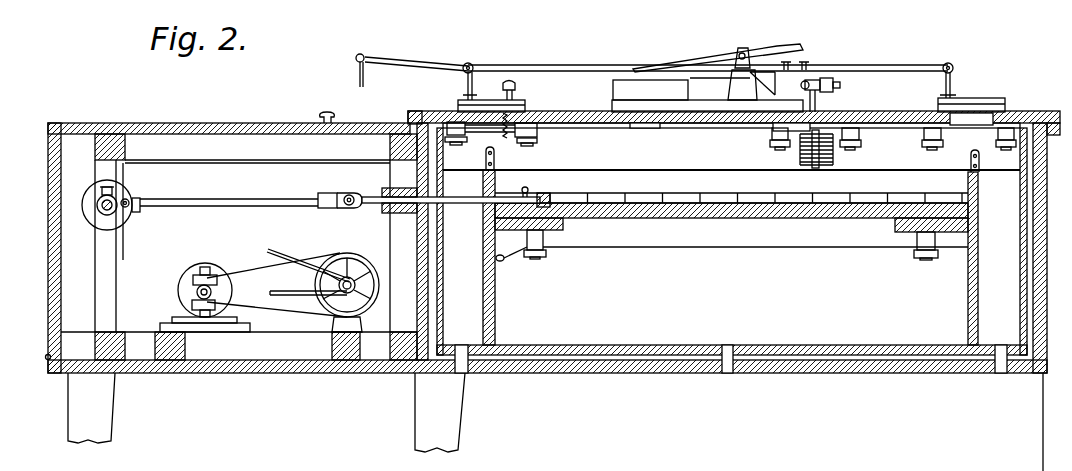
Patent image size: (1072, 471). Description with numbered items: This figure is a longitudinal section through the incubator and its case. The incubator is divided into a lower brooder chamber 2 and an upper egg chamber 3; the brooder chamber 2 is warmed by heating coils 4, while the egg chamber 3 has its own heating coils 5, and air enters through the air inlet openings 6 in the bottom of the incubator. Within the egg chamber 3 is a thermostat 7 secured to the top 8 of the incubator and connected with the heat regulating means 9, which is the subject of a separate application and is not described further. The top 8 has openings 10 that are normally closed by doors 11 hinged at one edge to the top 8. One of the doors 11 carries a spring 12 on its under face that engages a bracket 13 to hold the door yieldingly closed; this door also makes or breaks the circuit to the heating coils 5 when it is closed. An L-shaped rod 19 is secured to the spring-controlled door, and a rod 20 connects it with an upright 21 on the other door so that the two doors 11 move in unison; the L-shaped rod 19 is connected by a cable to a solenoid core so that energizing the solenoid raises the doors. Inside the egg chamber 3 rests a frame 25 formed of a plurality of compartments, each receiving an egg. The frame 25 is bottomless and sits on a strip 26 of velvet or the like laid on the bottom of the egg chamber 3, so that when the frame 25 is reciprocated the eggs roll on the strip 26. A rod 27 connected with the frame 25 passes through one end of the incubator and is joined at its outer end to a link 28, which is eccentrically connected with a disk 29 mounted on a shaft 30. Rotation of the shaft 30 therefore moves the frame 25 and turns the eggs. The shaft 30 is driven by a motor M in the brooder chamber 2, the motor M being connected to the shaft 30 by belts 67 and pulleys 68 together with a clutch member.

The brooder chamber 2 is at (553, 291).
The egg chamber 3 is at (731, 246).
The heating coils 4 is at (756, 250).
The heating coils 5 is at (651, 143).
The air inlet openings 6 is at (455, 376).
The thermostat 7 is at (833, 162).
The top 8 is at (900, 107).
The heat regulating means 9 is at (793, 80).
The openings 10 is at (972, 119).
The doors 11 is at (522, 107).
The spring 12 is at (498, 132).
The bracket 13 is at (507, 142).
The L-shaped rod 19 is at (424, 55).
The rod 20 is at (553, 62).
The upright 21 is at (953, 83).
The frame 25 is at (685, 197).
The strip 26 is at (711, 227).
The rod 27 is at (465, 202).
The link 28 is at (242, 208).
The disk 29 is at (122, 195).
The shaft 30 is at (100, 210).
The belts 67 is at (298, 292).
The pulleys 68 is at (355, 305).
The motor M is at (185, 278).